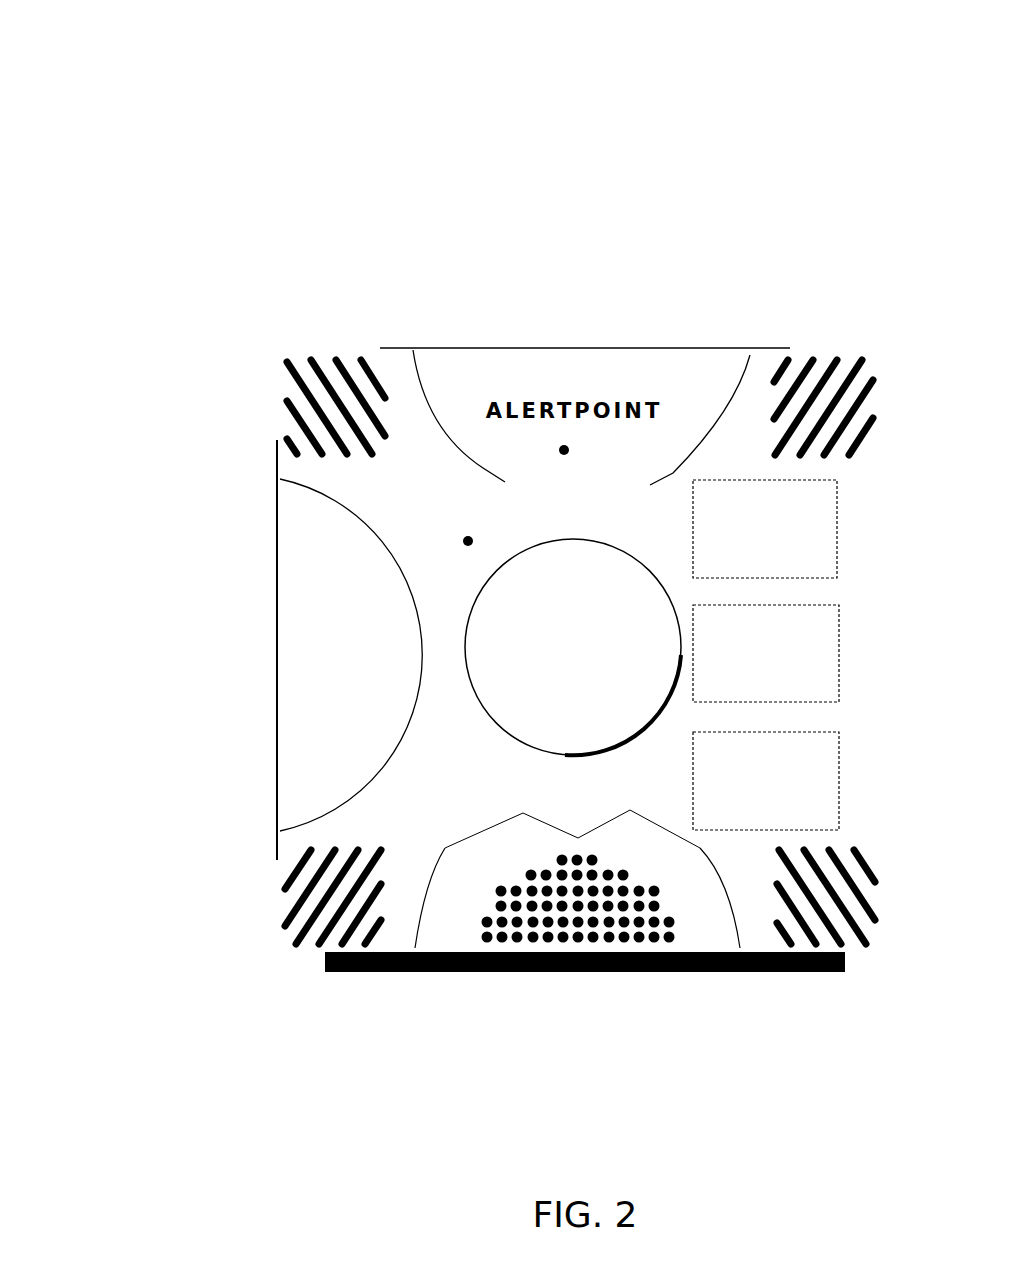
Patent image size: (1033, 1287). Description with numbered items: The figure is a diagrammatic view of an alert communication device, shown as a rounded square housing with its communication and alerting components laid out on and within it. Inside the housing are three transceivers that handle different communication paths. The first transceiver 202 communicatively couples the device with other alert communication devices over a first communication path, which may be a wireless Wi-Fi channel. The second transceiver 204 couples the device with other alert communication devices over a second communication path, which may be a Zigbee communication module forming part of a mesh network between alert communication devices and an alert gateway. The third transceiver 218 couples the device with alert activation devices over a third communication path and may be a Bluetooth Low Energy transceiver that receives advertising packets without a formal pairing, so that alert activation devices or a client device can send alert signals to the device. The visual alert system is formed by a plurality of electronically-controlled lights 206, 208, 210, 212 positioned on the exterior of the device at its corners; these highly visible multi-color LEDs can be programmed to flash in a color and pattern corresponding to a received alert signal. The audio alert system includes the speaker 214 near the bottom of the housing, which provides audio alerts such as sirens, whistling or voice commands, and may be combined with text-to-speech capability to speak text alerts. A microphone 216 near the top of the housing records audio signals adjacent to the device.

The first transceiver 202 is at (765, 529).
The second transceiver 204 is at (766, 653).
The third transceiver 218 is at (766, 781).
The electronically-controlled light 206 is at (302, 932).
The electronically-controlled light 208 is at (294, 366).
The electronically-controlled light 210 is at (858, 366).
The electronically-controlled light 212 is at (853, 953).
The speaker 214 is at (540, 970).
The microphone 216 is at (566, 459).